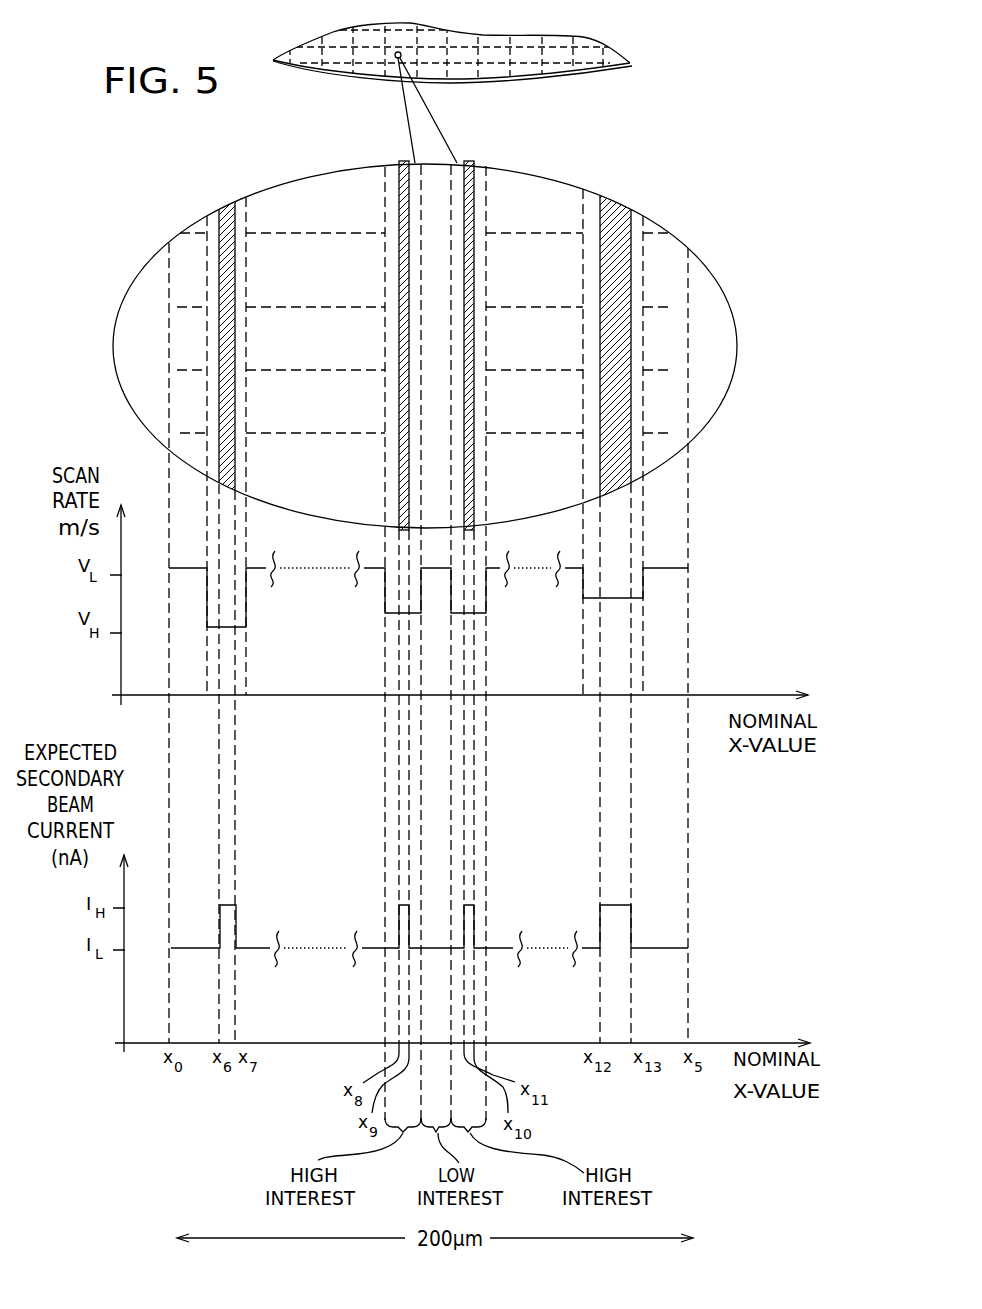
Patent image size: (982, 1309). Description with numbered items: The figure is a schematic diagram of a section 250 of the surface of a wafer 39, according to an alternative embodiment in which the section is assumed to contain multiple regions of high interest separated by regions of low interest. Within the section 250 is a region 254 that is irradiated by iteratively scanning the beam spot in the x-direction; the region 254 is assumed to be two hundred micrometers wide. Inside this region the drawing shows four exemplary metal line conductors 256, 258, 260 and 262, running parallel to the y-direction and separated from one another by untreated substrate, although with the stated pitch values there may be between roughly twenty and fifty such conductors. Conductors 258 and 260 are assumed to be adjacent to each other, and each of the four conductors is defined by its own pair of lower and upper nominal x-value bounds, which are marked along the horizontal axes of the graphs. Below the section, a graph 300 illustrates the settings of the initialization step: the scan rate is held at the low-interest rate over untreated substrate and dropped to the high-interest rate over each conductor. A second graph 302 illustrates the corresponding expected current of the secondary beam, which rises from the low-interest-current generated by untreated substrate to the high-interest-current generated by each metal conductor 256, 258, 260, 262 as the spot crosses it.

The wafer 39 is at (590, 67).
The section 250 is at (420, 59).
The region 254 is at (394, 50).
The conductor 256 is at (224, 220).
The conductor 258 is at (398, 163).
The conductor 260 is at (461, 163).
The conductor 262 is at (600, 200).
The graph 300 is at (727, 600).
The graph 302 is at (727, 902).